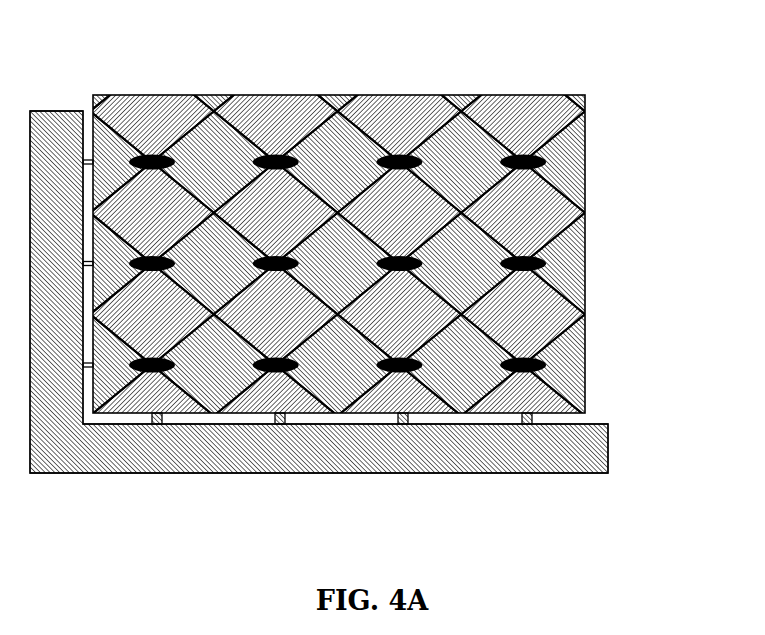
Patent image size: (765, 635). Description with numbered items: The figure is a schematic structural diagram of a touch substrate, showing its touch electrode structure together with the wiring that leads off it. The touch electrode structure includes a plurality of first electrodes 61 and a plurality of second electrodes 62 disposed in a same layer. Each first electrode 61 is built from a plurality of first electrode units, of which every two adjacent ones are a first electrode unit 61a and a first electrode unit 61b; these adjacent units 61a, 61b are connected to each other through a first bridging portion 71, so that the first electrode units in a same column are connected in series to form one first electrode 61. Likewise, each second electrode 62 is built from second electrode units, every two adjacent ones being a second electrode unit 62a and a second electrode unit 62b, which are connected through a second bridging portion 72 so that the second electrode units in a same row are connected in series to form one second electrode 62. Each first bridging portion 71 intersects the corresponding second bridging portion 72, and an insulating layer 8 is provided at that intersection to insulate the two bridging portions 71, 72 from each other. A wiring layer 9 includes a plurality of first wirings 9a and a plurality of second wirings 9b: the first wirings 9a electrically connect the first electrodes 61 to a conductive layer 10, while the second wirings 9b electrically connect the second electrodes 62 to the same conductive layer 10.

The insulating layer 8 is at (374, 238).
The first electrode 61 is at (591, 137).
The first electrode unit 61a is at (585, 109).
The first electrode unit 61b is at (585, 151).
The second electrode 62 is at (378, 115).
The second electrode unit 62a is at (428, 160).
The second electrode unit 62b is at (338, 128).
The first bridging portion 71 is at (518, 160).
The second bridging portion 72 is at (585, 229).
The wiring layer 9 is at (307, 356).
The first wiring 9a is at (154, 416).
The second wiring 9b is at (88, 367).
The conductive layer 10 is at (390, 448).